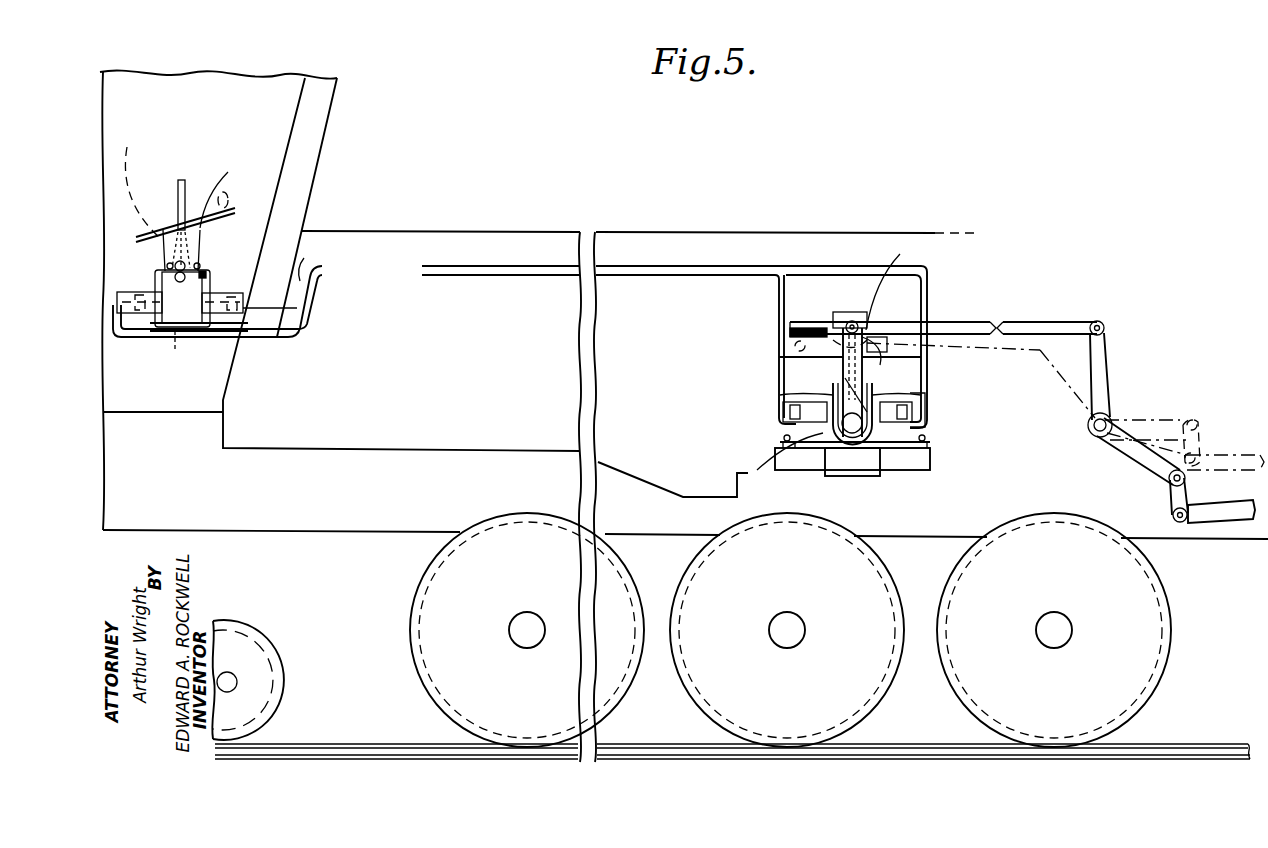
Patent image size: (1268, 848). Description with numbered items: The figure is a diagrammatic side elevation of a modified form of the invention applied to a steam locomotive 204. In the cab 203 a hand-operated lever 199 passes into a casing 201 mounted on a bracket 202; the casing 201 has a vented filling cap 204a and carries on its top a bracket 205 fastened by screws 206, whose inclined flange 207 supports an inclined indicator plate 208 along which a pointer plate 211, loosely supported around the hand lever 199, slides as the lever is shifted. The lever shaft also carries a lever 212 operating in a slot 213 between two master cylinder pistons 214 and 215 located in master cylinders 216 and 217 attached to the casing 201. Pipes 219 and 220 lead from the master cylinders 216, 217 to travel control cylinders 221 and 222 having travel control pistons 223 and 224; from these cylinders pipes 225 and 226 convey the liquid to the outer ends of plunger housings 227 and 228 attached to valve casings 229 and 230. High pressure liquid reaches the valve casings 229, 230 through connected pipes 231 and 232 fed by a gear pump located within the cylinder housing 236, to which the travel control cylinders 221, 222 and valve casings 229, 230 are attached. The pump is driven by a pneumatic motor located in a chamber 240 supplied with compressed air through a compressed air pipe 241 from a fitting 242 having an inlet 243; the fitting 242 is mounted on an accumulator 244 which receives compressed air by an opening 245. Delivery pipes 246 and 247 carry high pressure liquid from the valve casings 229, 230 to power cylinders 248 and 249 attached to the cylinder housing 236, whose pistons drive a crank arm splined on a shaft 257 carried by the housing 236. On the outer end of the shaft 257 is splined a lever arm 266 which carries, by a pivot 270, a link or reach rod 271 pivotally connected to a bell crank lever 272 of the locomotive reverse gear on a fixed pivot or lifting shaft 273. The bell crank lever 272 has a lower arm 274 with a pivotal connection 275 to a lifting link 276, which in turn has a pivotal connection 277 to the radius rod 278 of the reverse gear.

The hand-operated lever 199 is at (213, 152).
The casing 201 is at (167, 334).
The bracket 202 is at (200, 272).
The cab 203 is at (318, 128).
The steam locomotive 204 is at (699, 228).
The vented filling cap 204a is at (214, 240).
The bracket 205 is at (162, 266).
The screws 206 is at (160, 256).
The inclined flange 207 is at (176, 228).
The inclined indicator plate 208 is at (228, 208).
The pointer plate 211 is at (230, 192).
The lever 212 is at (262, 285).
The slot 213 is at (190, 332).
The master cylinder piston 214 is at (127, 333).
The master cylinder piston 215 is at (241, 346).
The master cylinder 216 is at (151, 293).
The master cylinder 217 is at (322, 259).
The pipe 219 is at (176, 333).
The pipe 220 is at (422, 266).
The travel control cylinder 221 is at (790, 471).
The travel control cylinder 222 is at (931, 461).
The travel control piston 223 is at (823, 406).
The travel control piston 224 is at (925, 438).
The pipe 225 is at (781, 421).
The pipe 226 is at (914, 399).
The plunger housing 227 is at (758, 465).
The plunger housing 228 is at (874, 381).
The valve casing 229 is at (826, 394).
The valve casing 230 is at (893, 393).
The pipe 231 is at (813, 358).
The pipe 232 is at (873, 348).
The cylinder housing 236 is at (873, 462).
The chamber 240 is at (880, 374).
The compressed air pipe 241 is at (866, 338).
The fitting 242 is at (848, 313).
The inlet 243 is at (843, 322).
The accumulator 244 is at (833, 312).
The opening 245 is at (791, 322).
The delivery pipe 246 is at (832, 434).
The delivery pipe 247 is at (853, 442).
The power cylinder 248 is at (911, 478).
The power cylinder 249 is at (826, 452).
The shaft 257 is at (855, 434).
The lever arm 266 is at (866, 324).
The pivot 270 is at (748, 333).
The link or reach rod 271 is at (1000, 321).
The bell crank lever 272 is at (1104, 360).
The fixed pivot or lifting shaft 273 is at (1092, 437).
The lower arm 274 is at (1156, 418).
The pivotal connection 275 is at (1199, 424).
The lifting link 276 is at (1150, 472).
The pivotal connection 277 is at (1194, 521).
The radius rod 278 is at (1233, 452).